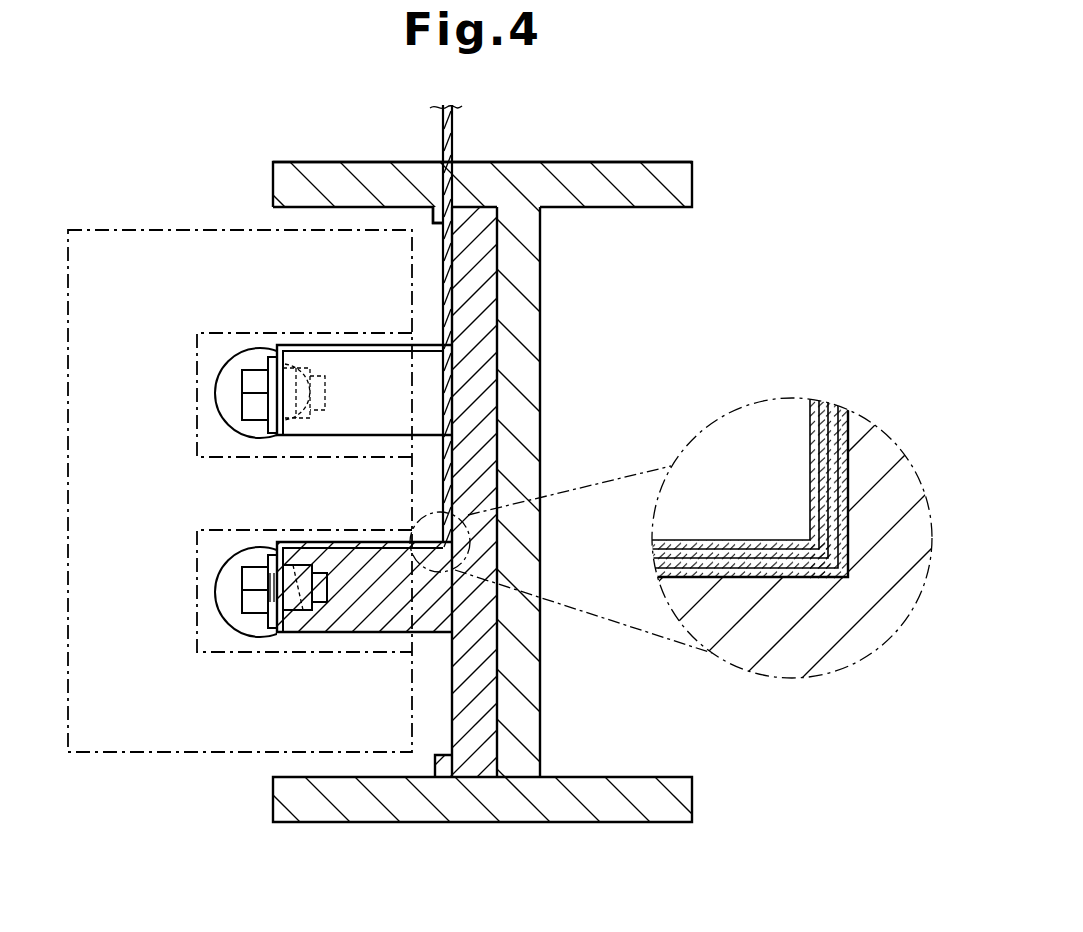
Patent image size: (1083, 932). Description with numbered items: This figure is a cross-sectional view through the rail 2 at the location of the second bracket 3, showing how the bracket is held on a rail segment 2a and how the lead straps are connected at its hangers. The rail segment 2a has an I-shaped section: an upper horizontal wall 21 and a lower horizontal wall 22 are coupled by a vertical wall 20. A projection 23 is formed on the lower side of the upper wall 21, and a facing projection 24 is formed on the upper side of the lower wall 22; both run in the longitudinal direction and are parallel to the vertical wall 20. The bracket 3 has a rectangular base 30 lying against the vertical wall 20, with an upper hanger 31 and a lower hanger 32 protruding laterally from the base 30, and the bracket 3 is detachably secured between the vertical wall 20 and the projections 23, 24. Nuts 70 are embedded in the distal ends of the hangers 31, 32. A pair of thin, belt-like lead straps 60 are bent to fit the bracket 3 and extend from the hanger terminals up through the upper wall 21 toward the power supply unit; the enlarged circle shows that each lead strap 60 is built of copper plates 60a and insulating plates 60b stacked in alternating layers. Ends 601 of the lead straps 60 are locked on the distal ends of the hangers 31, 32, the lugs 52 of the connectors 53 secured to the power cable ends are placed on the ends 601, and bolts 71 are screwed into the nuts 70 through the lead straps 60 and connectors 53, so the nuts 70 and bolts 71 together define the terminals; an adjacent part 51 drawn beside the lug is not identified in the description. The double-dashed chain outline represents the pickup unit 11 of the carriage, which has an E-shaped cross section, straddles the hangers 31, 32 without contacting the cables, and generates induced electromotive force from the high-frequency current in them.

The rail 2 is at (597, 129).
The rail segment 2a is at (517, 162).
The bracket 3 is at (477, 350).
The pickup unit 11 is at (150, 756).
The vertical wall 20 is at (528, 280).
The upper horizontal wall 21 is at (668, 168).
The lower horizontal wall 22 is at (606, 800).
The projection 23 is at (438, 219).
The projection 24 is at (432, 771).
The rectangular base 30 is at (480, 650).
The upper hanger 31 is at (390, 350).
The lower hanger 32 is at (391, 630).
The mounting plate 51 is at (237, 422).
The lug 52 is at (269, 357).
The connector 53 is at (236, 352).
The lead strap 60 is at (340, 345).
The copper plate 60a is at (813, 433).
The insulating plate 60b is at (813, 512).
The end of lead strap 601 is at (277, 440).
The nut 70 is at (330, 388).
The bolt 71 is at (255, 405).